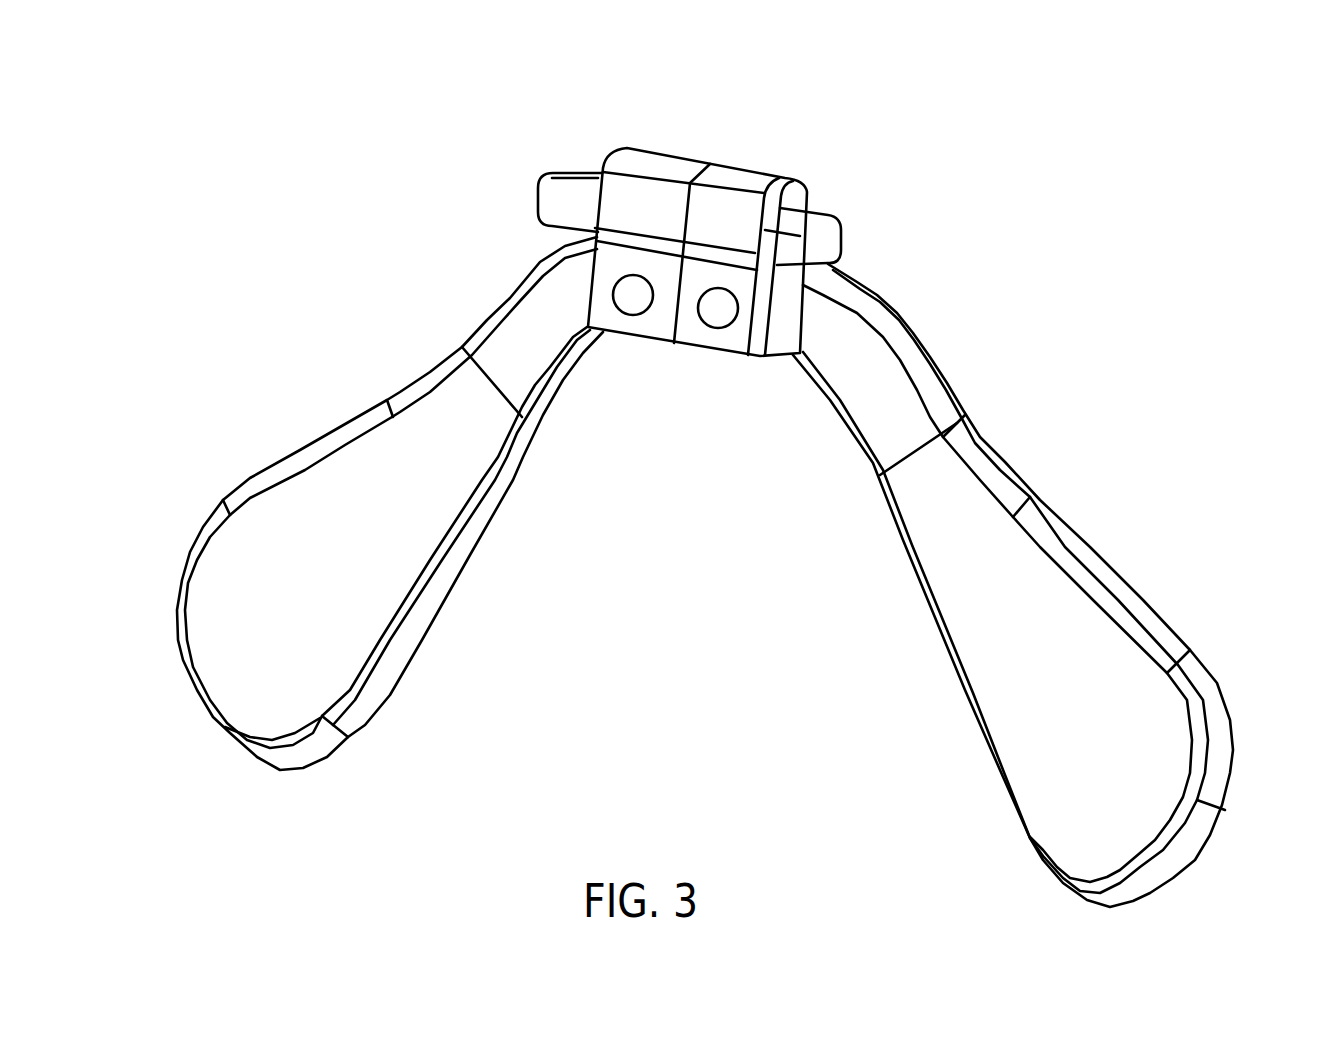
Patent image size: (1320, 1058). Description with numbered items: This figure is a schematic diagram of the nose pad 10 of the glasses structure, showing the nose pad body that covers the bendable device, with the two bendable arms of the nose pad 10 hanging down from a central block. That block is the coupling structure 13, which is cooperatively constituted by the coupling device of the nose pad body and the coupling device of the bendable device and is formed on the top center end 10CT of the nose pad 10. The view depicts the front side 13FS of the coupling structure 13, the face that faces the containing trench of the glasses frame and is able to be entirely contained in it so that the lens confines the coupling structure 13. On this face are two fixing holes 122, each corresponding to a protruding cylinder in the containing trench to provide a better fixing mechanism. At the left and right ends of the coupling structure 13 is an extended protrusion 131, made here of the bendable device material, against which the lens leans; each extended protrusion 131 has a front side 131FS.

The nose pad 10 is at (305, 275).
The coupling structure 13 is at (673, 313).
The front side of the coupling structure 13FS is at (617, 217).
The top center end of the nose pad 10CT is at (727, 167).
The fixing holes 122 is at (632, 308).
The extended protrusion 131 is at (555, 200).
The front side of the extended protrusion 131FS is at (797, 230).